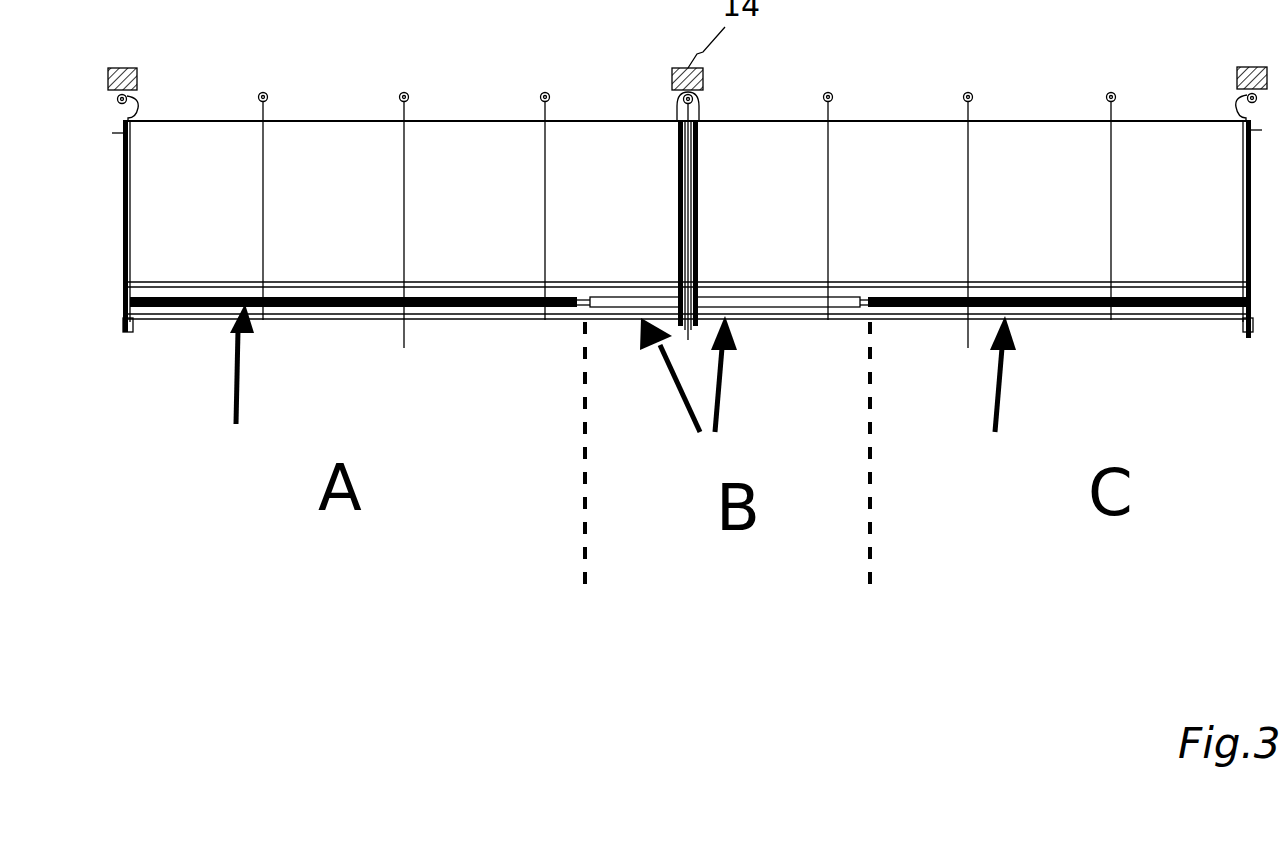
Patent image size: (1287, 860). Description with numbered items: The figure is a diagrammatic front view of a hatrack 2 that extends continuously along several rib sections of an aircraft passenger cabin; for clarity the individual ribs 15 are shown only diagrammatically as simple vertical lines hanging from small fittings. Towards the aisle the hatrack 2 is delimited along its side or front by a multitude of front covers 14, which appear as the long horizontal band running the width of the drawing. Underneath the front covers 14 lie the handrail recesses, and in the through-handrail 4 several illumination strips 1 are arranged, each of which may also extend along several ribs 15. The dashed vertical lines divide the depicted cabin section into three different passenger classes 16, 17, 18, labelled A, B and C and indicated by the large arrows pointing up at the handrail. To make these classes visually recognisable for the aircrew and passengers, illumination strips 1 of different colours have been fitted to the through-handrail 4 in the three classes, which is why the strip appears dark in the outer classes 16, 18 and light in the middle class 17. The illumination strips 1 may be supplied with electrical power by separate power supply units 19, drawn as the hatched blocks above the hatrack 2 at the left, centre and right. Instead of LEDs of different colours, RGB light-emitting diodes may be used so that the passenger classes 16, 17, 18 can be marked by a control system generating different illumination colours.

The illumination strip 1 is at (343, 307).
The hatrack 2 is at (420, 166).
The through-handrail 4 is at (390, 308).
The front cover 14 is at (468, 243).
The rib 15 is at (267, 93).
The passenger class 16 is at (230, 390).
The passenger class 17 is at (688, 396).
The passenger class 18 is at (999, 395).
The power supply unit 19 is at (1286, 18).